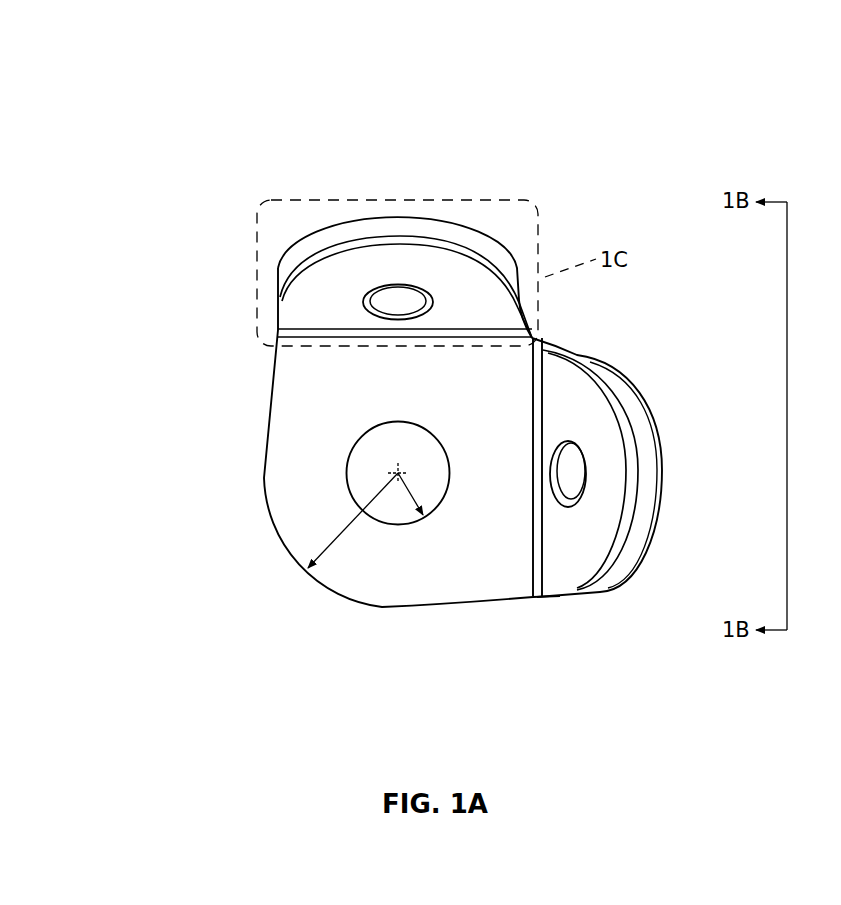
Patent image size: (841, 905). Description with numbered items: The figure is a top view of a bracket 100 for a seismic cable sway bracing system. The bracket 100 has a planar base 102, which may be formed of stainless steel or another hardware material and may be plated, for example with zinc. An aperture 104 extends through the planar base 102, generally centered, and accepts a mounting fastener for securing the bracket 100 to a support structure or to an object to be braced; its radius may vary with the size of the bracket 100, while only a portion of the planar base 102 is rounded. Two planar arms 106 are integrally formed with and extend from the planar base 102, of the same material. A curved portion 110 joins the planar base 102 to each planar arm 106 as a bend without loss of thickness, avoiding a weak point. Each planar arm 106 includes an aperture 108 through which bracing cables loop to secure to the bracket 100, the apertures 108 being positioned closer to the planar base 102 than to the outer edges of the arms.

The bracket 100 is at (330, 78).
The planar base 102 is at (298, 435).
The aperture 104 is at (383, 452).
The planar arm 106 is at (485, 244).
The aperture 108 is at (390, 302).
The curved portion 110 is at (274, 332).